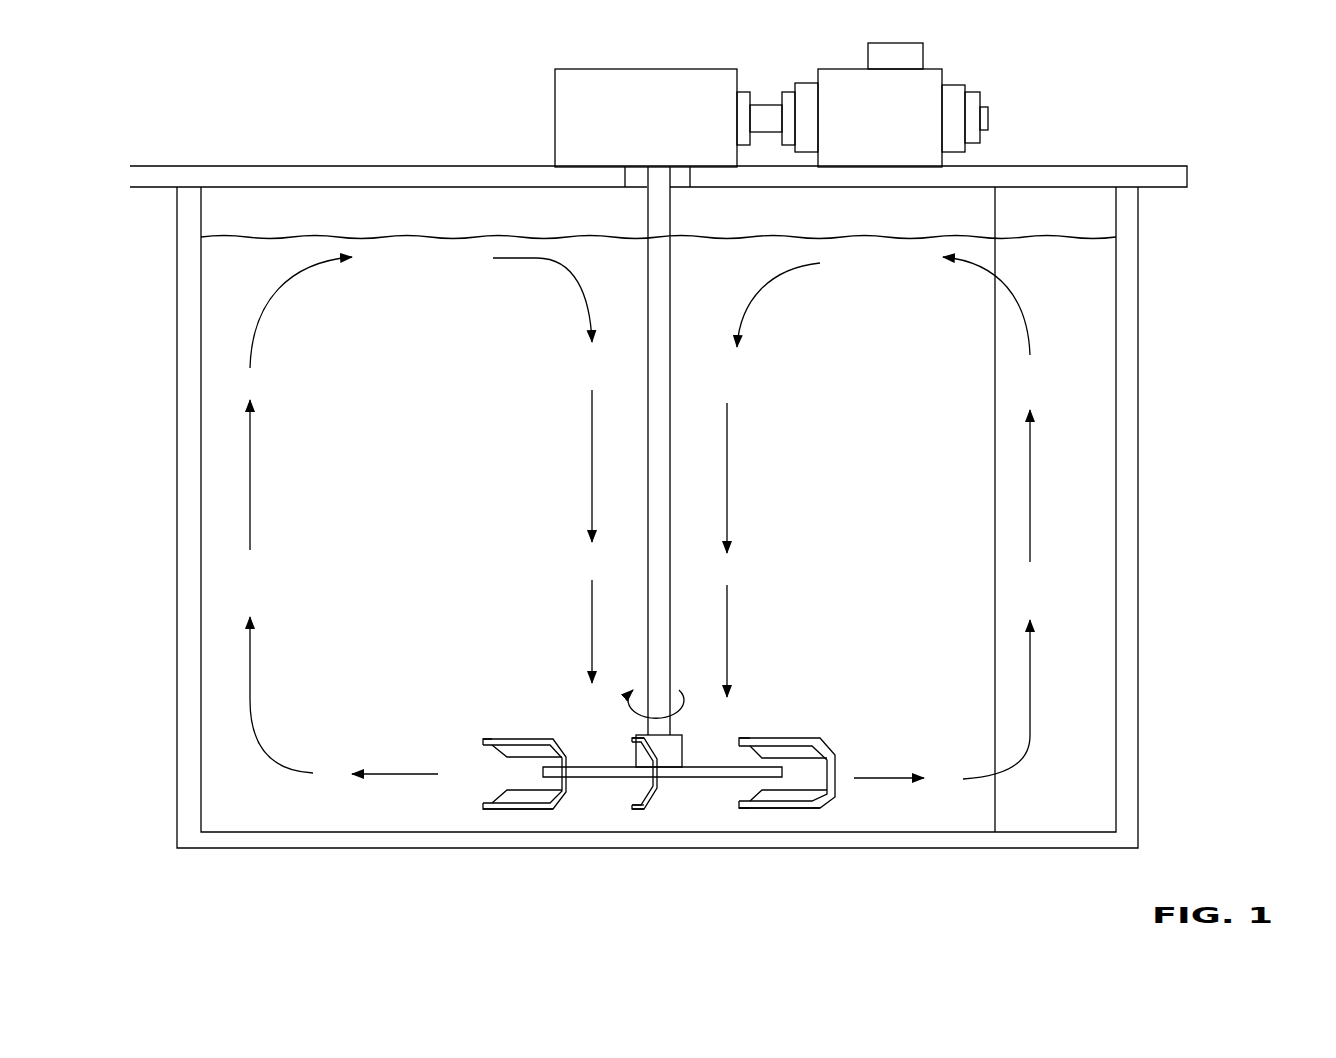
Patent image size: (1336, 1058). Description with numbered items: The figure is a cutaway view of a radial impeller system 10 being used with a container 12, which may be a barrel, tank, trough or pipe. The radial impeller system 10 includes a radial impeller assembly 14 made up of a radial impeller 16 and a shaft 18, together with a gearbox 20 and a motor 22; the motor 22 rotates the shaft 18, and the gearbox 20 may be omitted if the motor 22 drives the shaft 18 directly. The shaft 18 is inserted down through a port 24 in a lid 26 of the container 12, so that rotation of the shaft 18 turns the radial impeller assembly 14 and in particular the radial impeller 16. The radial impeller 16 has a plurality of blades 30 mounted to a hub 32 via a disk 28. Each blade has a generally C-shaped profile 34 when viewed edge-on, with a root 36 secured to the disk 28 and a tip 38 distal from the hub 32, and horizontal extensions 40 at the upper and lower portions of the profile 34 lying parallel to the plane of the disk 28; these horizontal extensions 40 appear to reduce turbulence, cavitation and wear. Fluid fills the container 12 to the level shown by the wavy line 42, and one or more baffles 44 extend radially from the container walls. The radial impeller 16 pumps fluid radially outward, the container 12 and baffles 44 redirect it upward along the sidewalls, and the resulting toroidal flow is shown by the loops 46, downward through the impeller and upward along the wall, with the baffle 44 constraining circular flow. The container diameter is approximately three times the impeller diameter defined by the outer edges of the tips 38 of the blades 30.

The radial impeller system 10 is at (227, 108).
The container 12 is at (1138, 700).
The radial impeller assembly 14 is at (568, 413).
The radial impeller 16 is at (760, 685).
The shaft 18 is at (668, 202).
The gearbox 20 is at (553, 115).
The motor 22 is at (958, 83).
The port 24 is at (628, 188).
The lid 26 is at (1050, 163).
The disk 28 is at (713, 793).
The blades 30 is at (512, 738).
The hub 32 is at (682, 740).
The profile 34 is at (627, 815).
The root 36 is at (522, 815).
The tip 38 is at (485, 752).
The horizontal extensions 40 is at (487, 738).
The wavy line 42 is at (833, 232).
The baffles 44 is at (992, 218).
The loops 46 is at (252, 507).